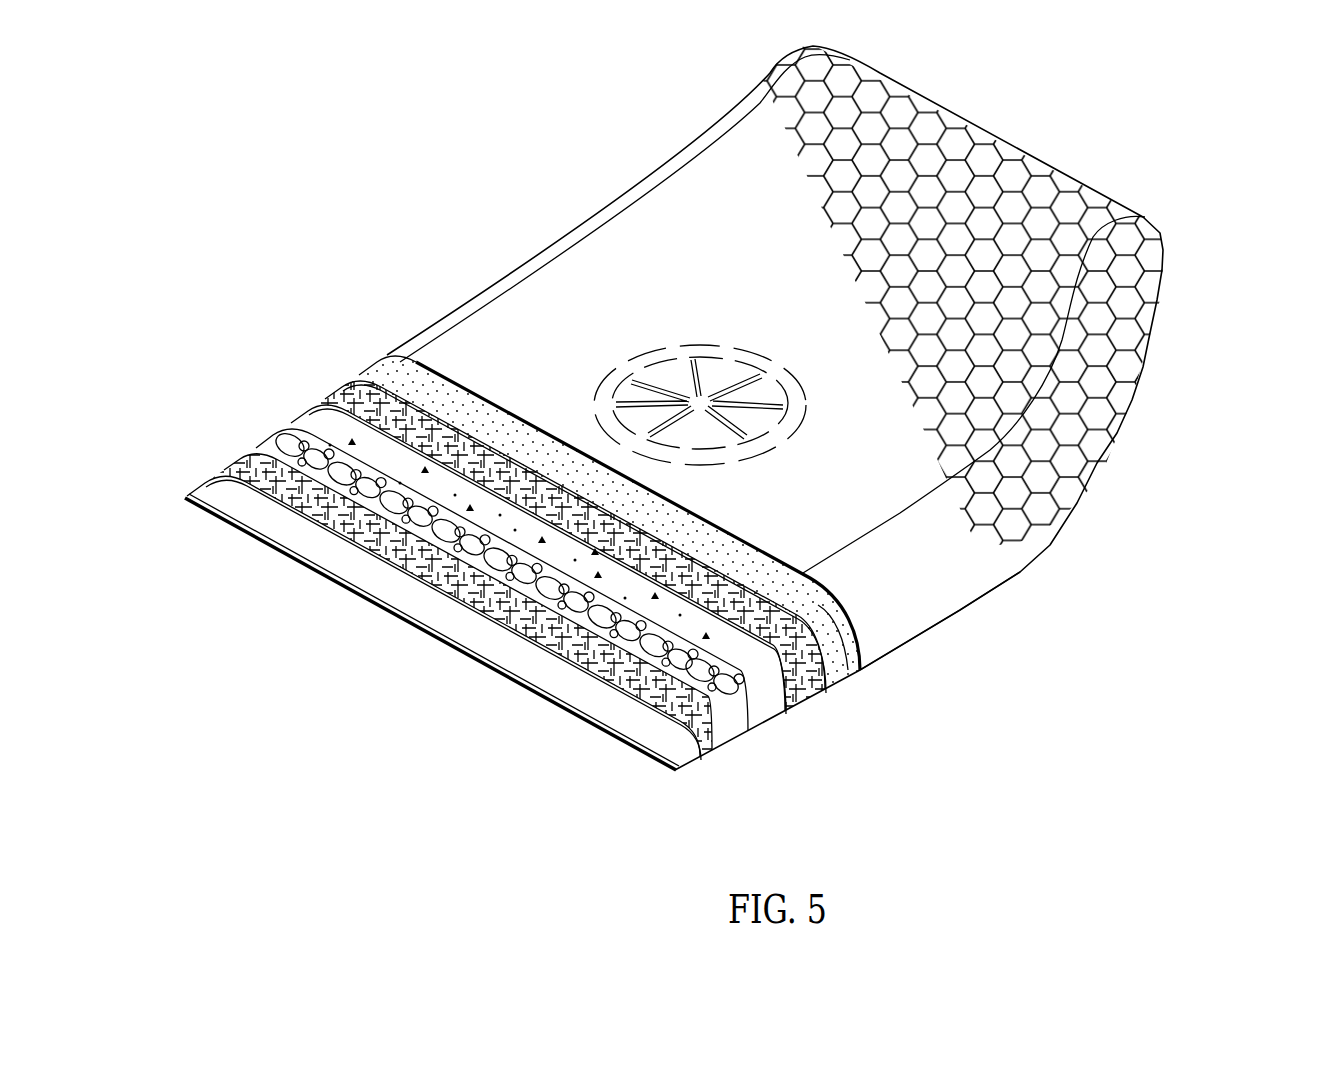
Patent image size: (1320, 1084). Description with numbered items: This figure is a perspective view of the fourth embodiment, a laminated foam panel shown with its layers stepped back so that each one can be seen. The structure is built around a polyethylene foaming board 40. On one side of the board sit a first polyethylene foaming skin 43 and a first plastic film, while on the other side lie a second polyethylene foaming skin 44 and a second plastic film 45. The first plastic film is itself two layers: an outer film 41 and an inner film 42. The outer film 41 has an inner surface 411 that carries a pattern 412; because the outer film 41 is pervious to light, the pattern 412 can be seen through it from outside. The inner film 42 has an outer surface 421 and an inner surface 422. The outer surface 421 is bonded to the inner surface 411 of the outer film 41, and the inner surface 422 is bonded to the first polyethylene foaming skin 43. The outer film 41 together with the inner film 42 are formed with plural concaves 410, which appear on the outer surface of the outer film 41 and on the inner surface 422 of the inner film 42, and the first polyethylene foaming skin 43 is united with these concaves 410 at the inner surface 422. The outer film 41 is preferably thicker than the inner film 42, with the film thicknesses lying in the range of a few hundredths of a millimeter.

The polyethylene foaming board 40 is at (702, 413).
The outer film 41 is at (838, 405).
The concaves 410 is at (1127, 362).
The inner surface of the outer film 411 is at (860, 672).
The pattern 412 is at (705, 345).
The inner film 42 is at (550, 475).
The outer surface of the inner film 421 is at (393, 352).
The inner surface of the inner film 422 is at (536, 526).
The first polyethylene foaming skin 43 is at (297, 411).
The second polyethylene foaming skin 44 is at (230, 468).
The second plastic film 45 is at (490, 648).